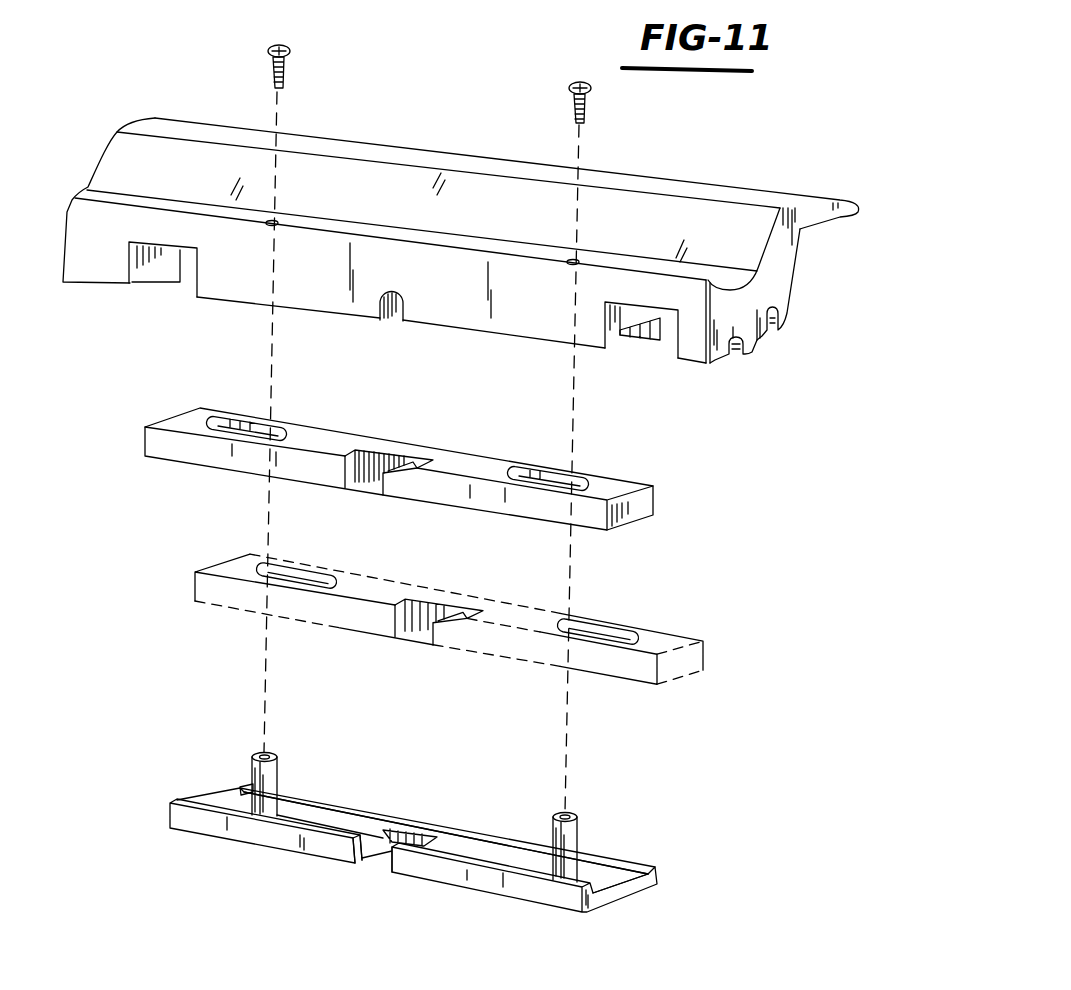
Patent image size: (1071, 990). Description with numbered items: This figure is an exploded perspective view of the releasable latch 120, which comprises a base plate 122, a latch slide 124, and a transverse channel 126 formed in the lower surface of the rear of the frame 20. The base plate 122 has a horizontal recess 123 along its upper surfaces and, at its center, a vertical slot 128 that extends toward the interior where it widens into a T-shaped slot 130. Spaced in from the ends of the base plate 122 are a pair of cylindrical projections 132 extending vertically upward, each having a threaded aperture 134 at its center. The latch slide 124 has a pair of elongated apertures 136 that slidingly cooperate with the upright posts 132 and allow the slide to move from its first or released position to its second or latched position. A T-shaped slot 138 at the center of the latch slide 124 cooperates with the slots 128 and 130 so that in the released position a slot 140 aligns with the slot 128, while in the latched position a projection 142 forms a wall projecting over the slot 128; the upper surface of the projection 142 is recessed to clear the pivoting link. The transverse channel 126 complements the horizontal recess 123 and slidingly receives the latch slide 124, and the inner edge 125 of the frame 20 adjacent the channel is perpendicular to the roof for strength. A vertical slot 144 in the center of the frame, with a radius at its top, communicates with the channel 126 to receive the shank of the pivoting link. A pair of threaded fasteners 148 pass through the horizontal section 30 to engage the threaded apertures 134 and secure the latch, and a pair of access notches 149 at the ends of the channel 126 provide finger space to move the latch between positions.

The frame 20 is at (648, 165).
The horizontal section 30 is at (776, 282).
The releasable latch 120 is at (108, 614).
The base plate 122 is at (666, 865).
The horizontal recess 123 is at (620, 884).
The latch slide 124 is at (708, 498).
The inner edge 125 is at (712, 345).
The transverse channel 126 is at (631, 346).
The vertical slot 128 is at (373, 871).
The T-shaped slot 130 is at (405, 835).
The cylindrical projection 132 is at (279, 783).
The threaded aperture 134 is at (269, 757).
The elongated aperture 136 is at (271, 430).
The T-shaped slot 138 is at (386, 461).
The slot 140 is at (369, 489).
The projection 142 is at (398, 488).
The vertical slot 144 is at (397, 309).
The threaded fastener 148 is at (291, 51).
The access notch 149 is at (179, 284).